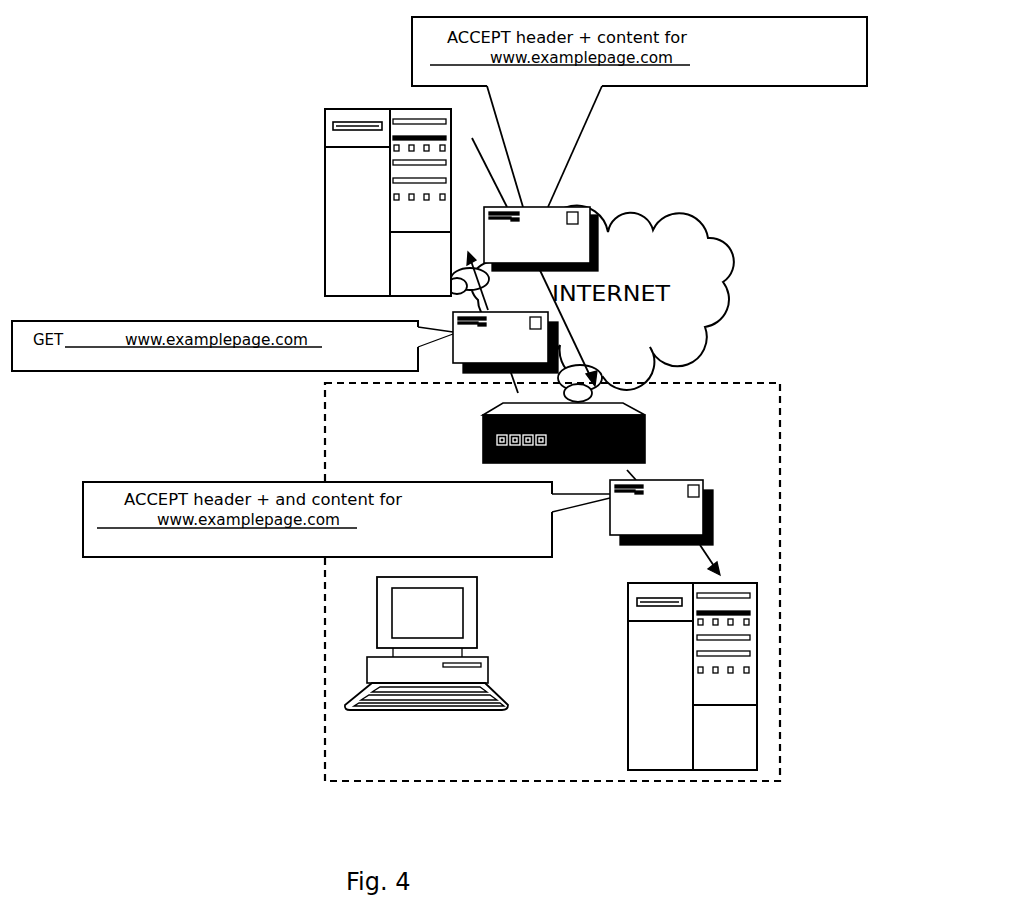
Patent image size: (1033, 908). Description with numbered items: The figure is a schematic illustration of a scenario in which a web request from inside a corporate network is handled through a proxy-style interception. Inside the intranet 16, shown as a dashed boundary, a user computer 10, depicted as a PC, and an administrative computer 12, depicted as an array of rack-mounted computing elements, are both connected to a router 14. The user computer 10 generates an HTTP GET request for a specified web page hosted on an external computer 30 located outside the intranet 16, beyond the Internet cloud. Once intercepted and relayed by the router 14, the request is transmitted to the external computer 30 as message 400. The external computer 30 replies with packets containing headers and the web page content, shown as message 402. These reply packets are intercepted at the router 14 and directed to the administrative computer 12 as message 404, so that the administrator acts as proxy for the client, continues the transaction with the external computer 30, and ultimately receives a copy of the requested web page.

The user computer 10 is at (387, 610).
The administrative computer 12 is at (650, 669).
The router 14 is at (630, 432).
The intranet 16 is at (617, 782).
The external computer 30 is at (334, 170).
The message 400 is at (488, 358).
The message 402 is at (518, 258).
The message 404 is at (644, 530).